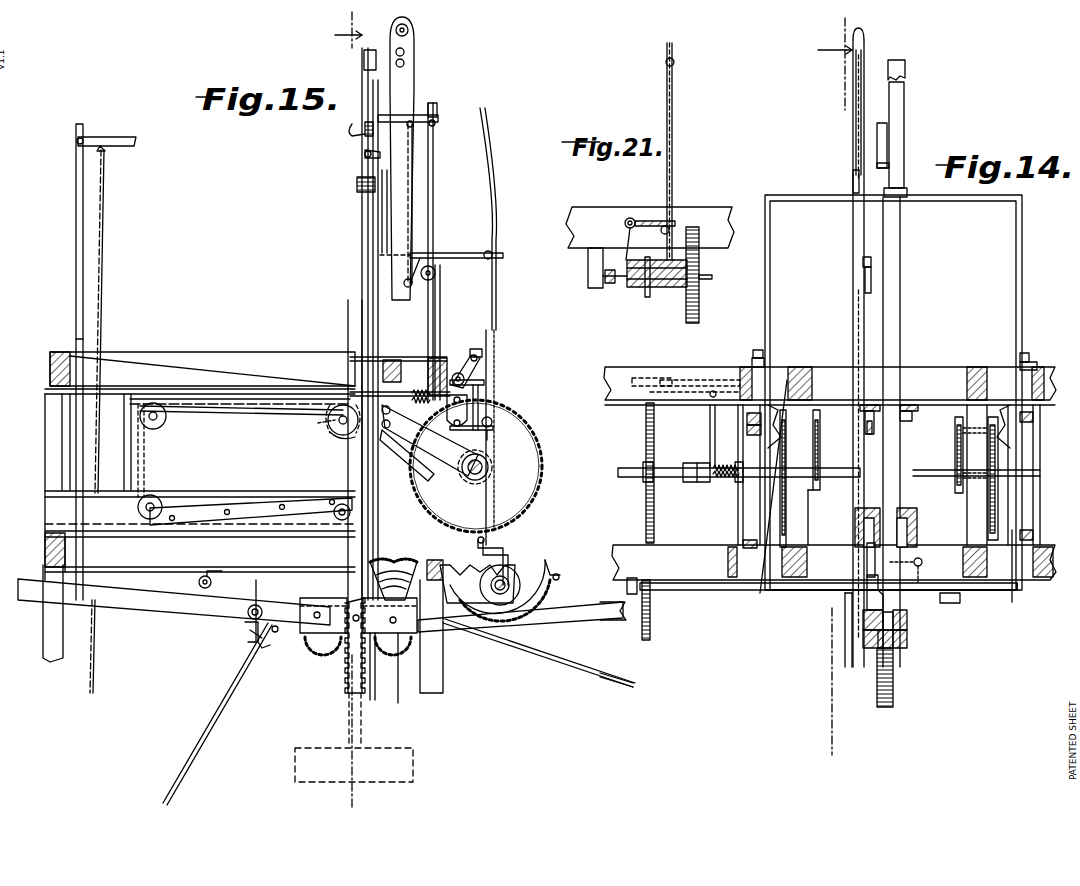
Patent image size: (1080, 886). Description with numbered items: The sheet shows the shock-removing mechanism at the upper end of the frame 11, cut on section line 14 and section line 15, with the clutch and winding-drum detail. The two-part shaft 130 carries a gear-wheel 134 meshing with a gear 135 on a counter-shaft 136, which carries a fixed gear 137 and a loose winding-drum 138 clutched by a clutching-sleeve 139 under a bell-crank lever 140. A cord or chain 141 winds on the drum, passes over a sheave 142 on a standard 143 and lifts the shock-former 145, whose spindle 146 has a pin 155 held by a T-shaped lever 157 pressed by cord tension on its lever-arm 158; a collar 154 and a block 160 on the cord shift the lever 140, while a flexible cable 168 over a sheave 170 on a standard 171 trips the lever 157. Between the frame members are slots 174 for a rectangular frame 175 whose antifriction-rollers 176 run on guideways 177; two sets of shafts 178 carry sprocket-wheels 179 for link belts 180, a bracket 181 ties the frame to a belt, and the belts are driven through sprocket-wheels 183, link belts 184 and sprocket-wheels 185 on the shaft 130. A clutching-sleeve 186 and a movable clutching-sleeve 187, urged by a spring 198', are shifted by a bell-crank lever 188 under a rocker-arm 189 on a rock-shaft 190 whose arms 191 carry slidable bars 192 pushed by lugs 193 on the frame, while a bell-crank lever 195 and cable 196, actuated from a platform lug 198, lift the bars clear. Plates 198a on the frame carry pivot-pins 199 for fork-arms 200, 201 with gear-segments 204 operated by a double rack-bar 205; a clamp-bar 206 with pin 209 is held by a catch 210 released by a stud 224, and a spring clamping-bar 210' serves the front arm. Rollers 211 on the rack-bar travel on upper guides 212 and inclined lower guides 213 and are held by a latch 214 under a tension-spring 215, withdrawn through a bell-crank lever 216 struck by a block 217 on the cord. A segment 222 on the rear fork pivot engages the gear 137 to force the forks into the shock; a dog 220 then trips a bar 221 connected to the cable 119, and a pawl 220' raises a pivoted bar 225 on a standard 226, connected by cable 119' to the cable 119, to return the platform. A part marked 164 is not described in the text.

In FIG. 15, the frame 11 is at (44, 630).
In FIG. 15, the section line 14 is at (337, 411).
In FIG. 14, the section line 15 is at (822, 386).
In FIG. 15, the cable 119 is at (436, 204).
In FIG. 15, the cable 119' is at (118, 421).
In FIG. 15, the two-part shaft 130 is at (485, 476).
In FIG. 14, the two-part shaft 130 is at (632, 478).
In FIG. 15, the gear-wheel 134 is at (545, 466).
In FIG. 21, the gear-wheel 134 is at (699, 275).
In FIG. 14, the gear-wheel 134 is at (648, 440).
In FIG. 15, the gear 135 is at (556, 565).
In FIG. 14, the gear 135 is at (650, 615).
In FIG. 15, the counter-shaft 136 is at (522, 583).
In FIG. 21, the counter-shaft 136 is at (608, 290).
In FIG. 14, the counter-shaft 136 is at (722, 591).
In FIG. 15, the fixed gear 137 is at (505, 630).
In FIG. 14, the fixed gear 137 is at (860, 545).
In FIG. 15, the winding-drum 138 is at (477, 584).
In FIG. 15, the clutching-sleeve 139 is at (502, 590).
In FIG. 21, the clutching-sleeve 139 is at (640, 290).
In FIG. 15, the bell-crank lever 140 is at (505, 560).
In FIG. 21, the bell-crank lever 140 is at (625, 228).
In FIG. 14, the bell-crank lever 140 is at (950, 603).
In FIG. 15, the cord or chain 141 is at (492, 185).
In FIG. 21, the cord or chain 141 is at (673, 145).
In FIG. 14, the cord or chain 141 is at (854, 105).
In FIG. 15, the sheave 142 is at (412, 27).
In FIG. 14, the sheave 142 is at (865, 40).
In FIG. 15, the standard 143 is at (410, 63).
In FIG. 14, the standard 143 is at (854, 85).
In FIG. 15, the shock-former 145 is at (380, 222).
In FIG. 14, the shock-former 145 is at (852, 180).
In FIG. 15, the vertical spindle 146 is at (388, 198).
In FIG. 21, the collar or block 154 is at (672, 230).
In FIG. 15, the projecting pin 155 is at (383, 252).
In FIG. 14, the projecting pin 155 is at (864, 283).
In FIG. 15, the T-shaped lever 157 is at (415, 262).
In FIG. 14, the T-shaped lever 157 is at (862, 262).
In FIG. 15, the lever-arm 158 is at (434, 275).
In FIG. 15, the block 160 is at (488, 540).
In FIG. 21, the block 160 is at (674, 62).
In FIG. 15, the guide 164 is at (350, 438).
In FIG. 15, the flexible cable or chain 168 is at (441, 318).
In FIG. 15, the sheave 170 is at (424, 282).
In FIG. 15, the standard 171 is at (434, 162).
In FIG. 14, the standard 171 is at (880, 215).
In FIG. 14, the longitudinal slots 174 is at (778, 367).
In FIG. 15, the rectangular frame 175 is at (362, 296).
In FIG. 14, the rectangular frame 175 is at (765, 266).
In FIG. 14, the antifriction-rollers 176 is at (747, 418).
In FIG. 15, the guideways 177 is at (240, 412).
In FIG. 14, the guideways 177 is at (750, 433).
In FIG. 15, the shafts 178 is at (140, 424).
In FIG. 14, the shafts 178 is at (860, 530).
In FIG. 15, the sprocket-wheel 179 is at (160, 426).
In FIG. 14, the sprocket-wheel 179 is at (1012, 602).
In FIG. 15, the link belt 180 is at (170, 399).
In FIG. 14, the link belt 180 is at (778, 495).
In FIG. 14, the bracket 181 is at (786, 405).
In FIG. 15, the sprocket-wheels 183 is at (340, 434).
In FIG. 14, the sprocket-wheels 183 is at (832, 450).
In FIG. 14, the link belts 184 is at (955, 437).
In FIG. 14, the sprocket-wheels 185 is at (820, 490).
In FIG. 14, the clutching-sleeve 186 is at (692, 482).
In FIG. 14, the clutching-sleeve 187 is at (712, 480).
In FIG. 15, the bell-crank lever 188 is at (484, 385).
In FIG. 14, the bell-crank lever 188 is at (710, 424).
In FIG. 15, the rocker-arm 189 is at (478, 375).
In FIG. 14, the rocker-arm 189 is at (655, 378).
In FIG. 15, the rock-shaft 190 is at (474, 355).
In FIG. 14, the rock-shaft 190 is at (700, 380).
In FIG. 15, the arms 191 is at (480, 349).
In FIG. 15, the slidable bars 192 is at (392, 358).
In FIG. 14, the slidable bars 192 is at (754, 360).
In FIG. 15, the lugs 193 is at (356, 346).
In FIG. 14, the lugs 193 is at (758, 350).
In FIG. 15, the bell-crank lever 195 is at (356, 356).
In FIG. 14, the bell-crank lever 195 is at (735, 360).
In FIG. 15, the cable 196 is at (403, 455).
In FIG. 15, the lug 198 is at (290, 638).
In FIG. 14, the lug 198 is at (847, 633).
In FIG. 14, the spring 198' is at (723, 495).
In FIG. 14, the bars or plates 198a is at (907, 645).
In FIG. 15, the pivot-pins 199 is at (318, 612).
In FIG. 14, the pivot-pins 199 is at (907, 628).
In FIG. 15, the fork-arm 200 is at (152, 608).
In FIG. 15, the fork-arm 201 is at (520, 616).
In FIG. 15, the gear-segment 204 is at (322, 648).
In FIG. 14, the gear-segment 204 is at (877, 655).
In FIG. 15, the double rack-bar 205 is at (346, 690).
In FIG. 14, the double rack-bar 205 is at (905, 95).
In FIG. 15, the clamp-bar 206 is at (195, 727).
In FIG. 15, the pin 209 is at (266, 648).
In FIG. 15, the catch 210 is at (269, 609).
In FIG. 15, the clamping-bar 210' is at (539, 657).
In FIG. 15, the antifriction-roller 211 is at (308, 428).
In FIG. 14, the antifriction-roller 211 is at (912, 416).
In FIG. 15, the upper guides 212 is at (320, 392).
In FIG. 14, the upper guides 212 is at (908, 403).
In FIG. 15, the lower guides 213 is at (238, 510).
In FIG. 14, the lower guides 213 is at (893, 512).
In FIG. 15, the latch 214 is at (356, 392).
In FIG. 15, the tension-spring 215 is at (430, 440).
In FIG. 15, the bell-crank lever 216 is at (469, 408).
In FIG. 14, the bell-crank lever 216 is at (870, 436).
In FIG. 15, the block 217 is at (495, 420).
In FIG. 15, the pivoted dog 220 is at (349, 148).
In FIG. 15, the pawl 220' is at (345, 125).
In FIG. 15, the bar 221 is at (405, 118).
In FIG. 14, the bar 221 is at (888, 128).
In FIG. 15, the segment 222 is at (393, 579).
In FIG. 14, the segment 222 is at (866, 592).
In FIG. 15, the stud 224 is at (198, 582).
In FIG. 15, the pivoted bar 225 is at (112, 133).
In FIG. 15, the standard 226 is at (76, 195).